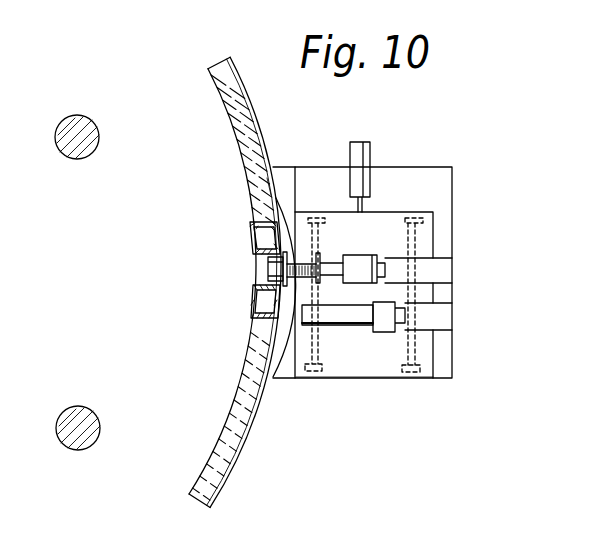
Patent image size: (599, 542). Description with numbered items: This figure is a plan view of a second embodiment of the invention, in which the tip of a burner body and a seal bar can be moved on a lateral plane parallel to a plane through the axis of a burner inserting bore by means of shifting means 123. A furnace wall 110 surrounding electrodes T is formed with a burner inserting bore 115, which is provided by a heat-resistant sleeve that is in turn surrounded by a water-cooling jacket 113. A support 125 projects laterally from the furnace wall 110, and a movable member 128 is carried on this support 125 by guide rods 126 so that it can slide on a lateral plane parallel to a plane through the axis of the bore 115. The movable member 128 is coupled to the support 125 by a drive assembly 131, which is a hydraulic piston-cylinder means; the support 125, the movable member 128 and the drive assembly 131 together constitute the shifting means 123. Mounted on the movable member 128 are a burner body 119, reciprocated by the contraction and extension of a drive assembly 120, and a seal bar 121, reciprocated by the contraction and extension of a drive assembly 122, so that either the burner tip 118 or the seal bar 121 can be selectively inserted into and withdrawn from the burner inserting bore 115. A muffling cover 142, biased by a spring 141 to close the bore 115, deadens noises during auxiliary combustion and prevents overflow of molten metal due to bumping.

The furnace wall 110 is at (246, 461).
The water-cooling jacket 113 is at (249, 328).
The burner inserting bore 115 is at (266, 279).
The burner tip 118 is at (266, 268).
The burner body 119 is at (330, 258).
The drive assembly 120 is at (440, 273).
The seal bar 121 is at (302, 327).
The drive assembly 122 is at (440, 322).
The shifting means 123 is at (392, 205).
The support 125 is at (440, 180).
The guide rods 126 is at (418, 247).
The movable member 128 is at (372, 368).
The drive assembly 131 is at (352, 157).
The spring 141 is at (268, 188).
The muffling cover 142 is at (266, 213).
The electrodes T is at (90, 143).